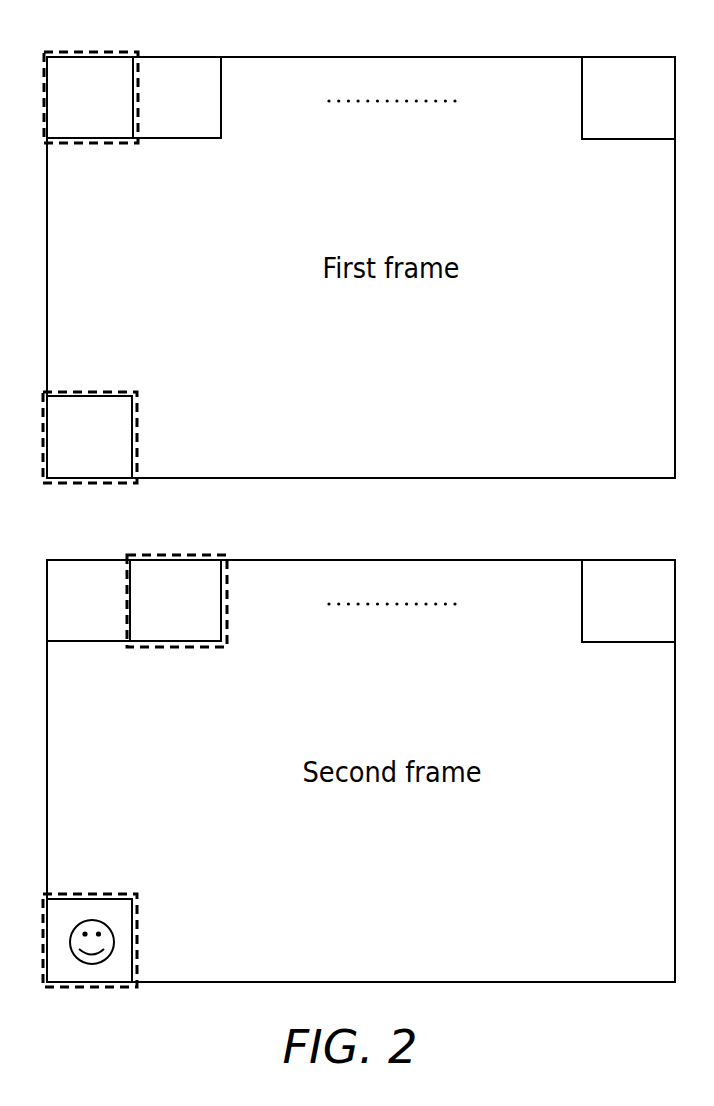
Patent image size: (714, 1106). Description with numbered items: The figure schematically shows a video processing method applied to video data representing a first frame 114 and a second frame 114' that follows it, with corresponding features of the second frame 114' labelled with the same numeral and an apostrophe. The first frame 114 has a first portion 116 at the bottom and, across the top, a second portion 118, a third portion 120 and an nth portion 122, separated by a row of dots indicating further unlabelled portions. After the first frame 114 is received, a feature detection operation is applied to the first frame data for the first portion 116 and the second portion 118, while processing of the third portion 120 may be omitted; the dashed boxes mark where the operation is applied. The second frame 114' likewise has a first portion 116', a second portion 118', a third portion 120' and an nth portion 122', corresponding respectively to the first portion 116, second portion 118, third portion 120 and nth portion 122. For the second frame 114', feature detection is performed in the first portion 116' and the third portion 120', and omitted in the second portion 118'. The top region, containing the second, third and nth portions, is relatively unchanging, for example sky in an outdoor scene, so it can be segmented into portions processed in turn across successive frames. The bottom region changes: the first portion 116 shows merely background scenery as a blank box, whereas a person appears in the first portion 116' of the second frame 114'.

The first frame 114 is at (361, 249).
The second frame 114' is at (361, 752).
The first portion 116 is at (90, 437).
The first portion 116' is at (97, 924).
The second portion 118 is at (91, 97).
The second portion 118' is at (88, 600).
The third portion 120 is at (177, 97).
The third portion 120' is at (177, 601).
The nth portion 122 is at (628, 98).
The nth portion 122' is at (628, 601).